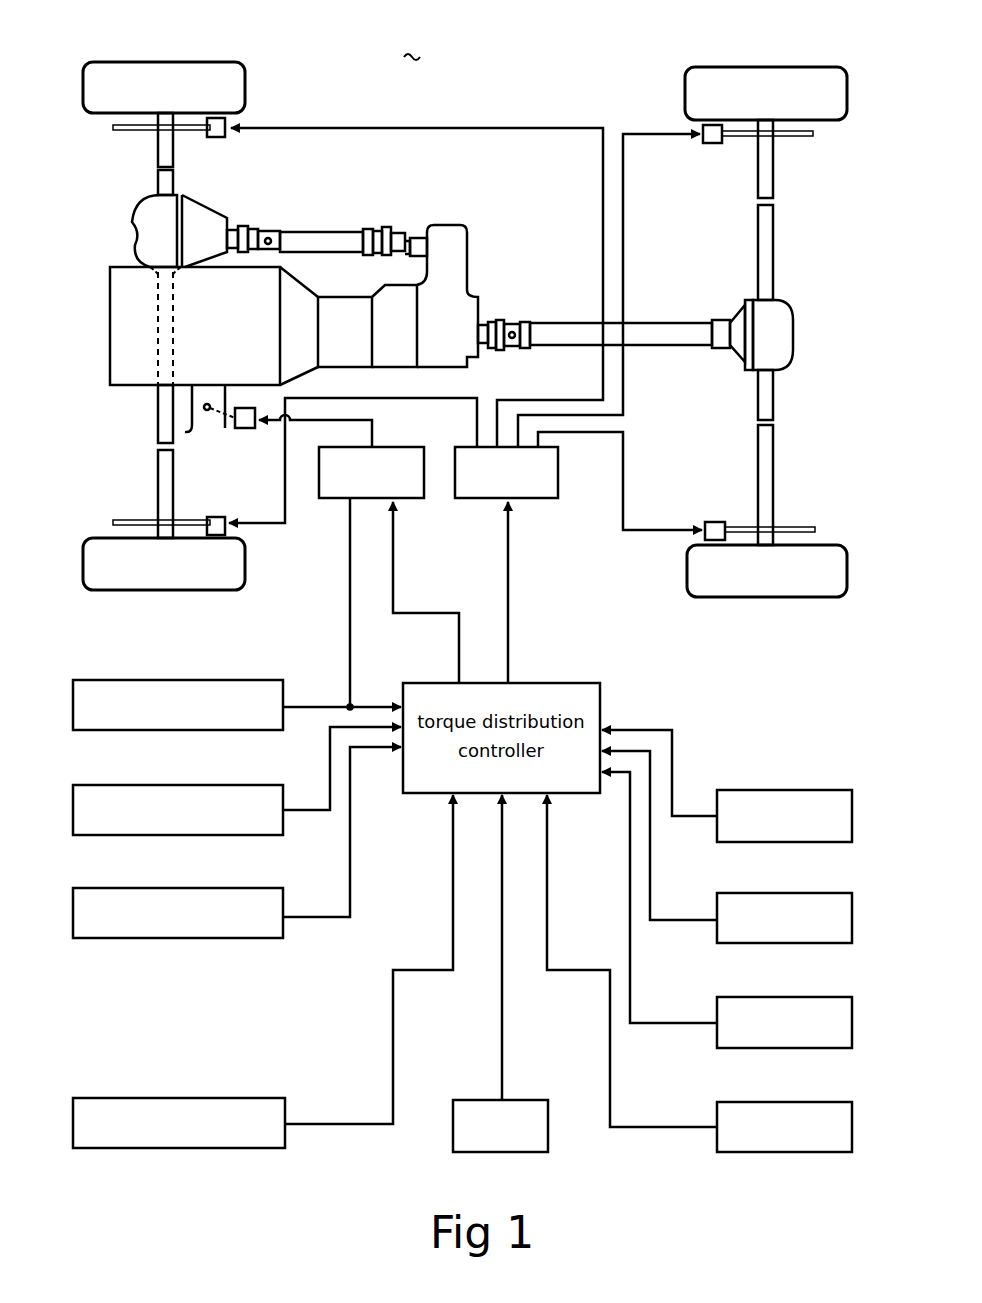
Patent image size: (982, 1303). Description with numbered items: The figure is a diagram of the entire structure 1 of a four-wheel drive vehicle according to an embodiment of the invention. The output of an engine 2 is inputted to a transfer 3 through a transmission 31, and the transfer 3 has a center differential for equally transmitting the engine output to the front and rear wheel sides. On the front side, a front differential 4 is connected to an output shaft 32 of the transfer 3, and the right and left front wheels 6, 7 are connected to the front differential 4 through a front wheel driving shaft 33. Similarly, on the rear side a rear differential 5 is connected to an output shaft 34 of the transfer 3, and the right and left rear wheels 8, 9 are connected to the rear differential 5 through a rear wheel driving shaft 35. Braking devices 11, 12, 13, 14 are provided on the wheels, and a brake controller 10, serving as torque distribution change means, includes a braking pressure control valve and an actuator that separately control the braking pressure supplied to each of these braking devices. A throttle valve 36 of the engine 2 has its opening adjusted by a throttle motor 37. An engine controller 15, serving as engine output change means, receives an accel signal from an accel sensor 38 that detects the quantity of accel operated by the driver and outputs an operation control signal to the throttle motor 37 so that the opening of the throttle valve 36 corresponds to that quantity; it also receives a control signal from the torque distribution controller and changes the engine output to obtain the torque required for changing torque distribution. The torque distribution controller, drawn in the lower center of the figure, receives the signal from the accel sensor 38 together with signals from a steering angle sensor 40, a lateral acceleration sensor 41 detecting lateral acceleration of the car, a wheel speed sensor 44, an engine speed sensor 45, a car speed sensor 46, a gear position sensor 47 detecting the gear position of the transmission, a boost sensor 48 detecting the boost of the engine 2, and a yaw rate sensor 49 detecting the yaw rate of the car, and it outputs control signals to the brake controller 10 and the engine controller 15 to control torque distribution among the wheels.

The entire structure 1 is at (413, 38).
The engine 2 is at (112, 350).
The transfer 3 is at (462, 296).
The front differential 4 is at (143, 217).
The rear differential 5 is at (792, 327).
The front wheel 6 is at (118, 592).
The front wheel 7 is at (128, 63).
The rear wheel 8 is at (810, 598).
The rear wheel 9 is at (812, 67).
The brake controller 10 is at (535, 500).
The braking device 11 is at (228, 532).
The braking device 12 is at (228, 119).
The braking device 13 is at (714, 520).
The braking device 14 is at (712, 144).
The engine controller 15 is at (403, 500).
The transmission 31 is at (332, 305).
The output shaft 32 is at (328, 237).
The front wheel driving shaft 33 is at (176, 181).
The output shaft 34 is at (678, 325).
The rear wheel driving shaft 35 is at (775, 245).
The throttle valve 36 is at (200, 422).
The throttle motor 37 is at (245, 428).
The accel sensor 38 is at (195, 680).
The steering angle sensor 40 is at (195, 785).
The lateral acceleration sensor 41 is at (195, 888).
The wheel speed sensor 44 is at (783, 790).
The engine speed sensor 45 is at (783, 893).
The car speed sensor 46 is at (783, 997).
The gear position sensor 47 is at (783, 1102).
The boost sensor 48 is at (193, 1098).
The yaw rate sensor 49 is at (522, 1100).